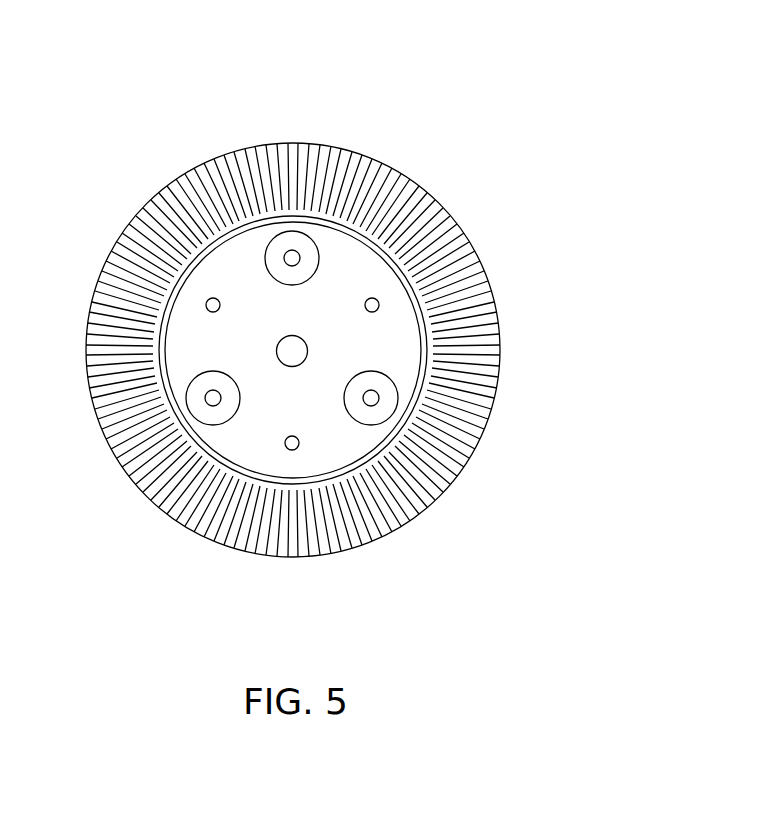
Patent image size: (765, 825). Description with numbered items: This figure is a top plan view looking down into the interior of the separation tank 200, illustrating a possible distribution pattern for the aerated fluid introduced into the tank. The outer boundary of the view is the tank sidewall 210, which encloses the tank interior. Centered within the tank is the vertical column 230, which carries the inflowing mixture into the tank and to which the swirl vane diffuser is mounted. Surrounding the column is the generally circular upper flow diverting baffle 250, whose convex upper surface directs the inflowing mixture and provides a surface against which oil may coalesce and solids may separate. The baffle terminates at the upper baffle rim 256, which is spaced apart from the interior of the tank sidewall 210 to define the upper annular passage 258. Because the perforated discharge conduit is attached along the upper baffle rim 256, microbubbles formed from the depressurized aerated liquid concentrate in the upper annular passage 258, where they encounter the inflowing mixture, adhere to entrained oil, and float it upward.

The separation tank 200 is at (470, 100).
The tank sidewall 210 is at (344, 558).
The vertical column 230 is at (310, 352).
The upper flow diverting baffle 250 is at (252, 270).
The upper baffle rim 256 is at (428, 337).
The upper annular passage 258 is at (127, 449).